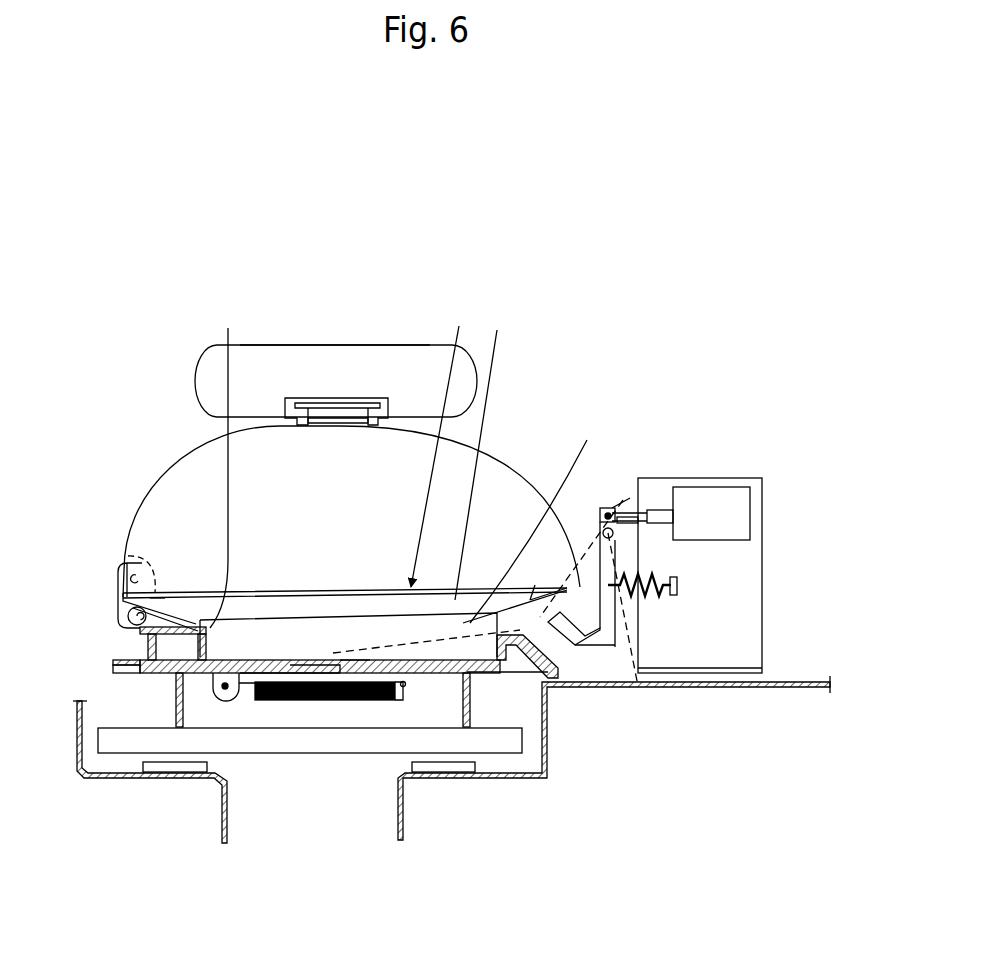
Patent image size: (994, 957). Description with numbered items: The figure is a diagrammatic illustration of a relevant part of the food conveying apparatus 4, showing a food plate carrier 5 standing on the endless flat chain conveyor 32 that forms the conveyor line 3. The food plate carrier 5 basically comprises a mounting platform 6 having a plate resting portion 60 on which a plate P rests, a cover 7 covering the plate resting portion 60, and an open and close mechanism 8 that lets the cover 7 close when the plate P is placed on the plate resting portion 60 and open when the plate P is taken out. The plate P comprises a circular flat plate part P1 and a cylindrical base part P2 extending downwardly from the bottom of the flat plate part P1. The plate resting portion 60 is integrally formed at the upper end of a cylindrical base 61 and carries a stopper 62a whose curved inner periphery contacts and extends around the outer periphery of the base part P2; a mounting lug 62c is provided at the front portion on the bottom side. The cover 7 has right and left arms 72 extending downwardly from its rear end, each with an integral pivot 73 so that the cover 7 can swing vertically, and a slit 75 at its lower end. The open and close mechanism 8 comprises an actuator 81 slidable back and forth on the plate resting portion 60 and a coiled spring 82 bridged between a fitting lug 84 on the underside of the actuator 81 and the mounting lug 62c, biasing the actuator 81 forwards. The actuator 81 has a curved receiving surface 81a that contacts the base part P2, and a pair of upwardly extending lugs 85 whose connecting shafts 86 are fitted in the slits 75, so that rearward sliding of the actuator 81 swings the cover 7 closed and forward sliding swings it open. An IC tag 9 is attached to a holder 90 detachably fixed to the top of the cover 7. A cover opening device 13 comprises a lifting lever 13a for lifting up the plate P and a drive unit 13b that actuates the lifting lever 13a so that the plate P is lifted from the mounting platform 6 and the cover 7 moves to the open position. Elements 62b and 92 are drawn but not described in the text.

The conveyor line 3 is at (380, 758).
The food conveying apparatus 4 is at (302, 830).
The food plate carrier 5 is at (170, 436).
The mounting platform 6 is at (150, 678).
The cover 7 is at (518, 462).
The open and close mechanism 8 is at (279, 651).
The IC tag 9 is at (372, 405).
The cover opening device 13 is at (743, 476).
The lifting lever 13a is at (587, 640).
The drive unit 13b is at (727, 510).
The flat chain conveyor 32 is at (253, 756).
The plate resting portion 60 is at (355, 660).
The cylindrical base 61 is at (178, 704).
The stopper 62a is at (480, 674).
The pad 62b is at (246, 688).
The mounting lug 62c is at (395, 692).
The arm 72 is at (122, 578).
The pivot 73 is at (127, 553).
The slit 75 is at (142, 634).
The actuator 81 is at (272, 651).
The receiving surface 81a is at (229, 462).
The coiled spring 82 is at (310, 703).
The fitting lug 84 is at (226, 696).
The lug 85 is at (163, 600).
The connecting shaft 86 is at (127, 612).
The holder 90 is at (348, 338).
The can body 92 is at (277, 345).
The plate P is at (440, 445).
The flat plate part P1 is at (485, 445).
The base part P2 is at (532, 517).